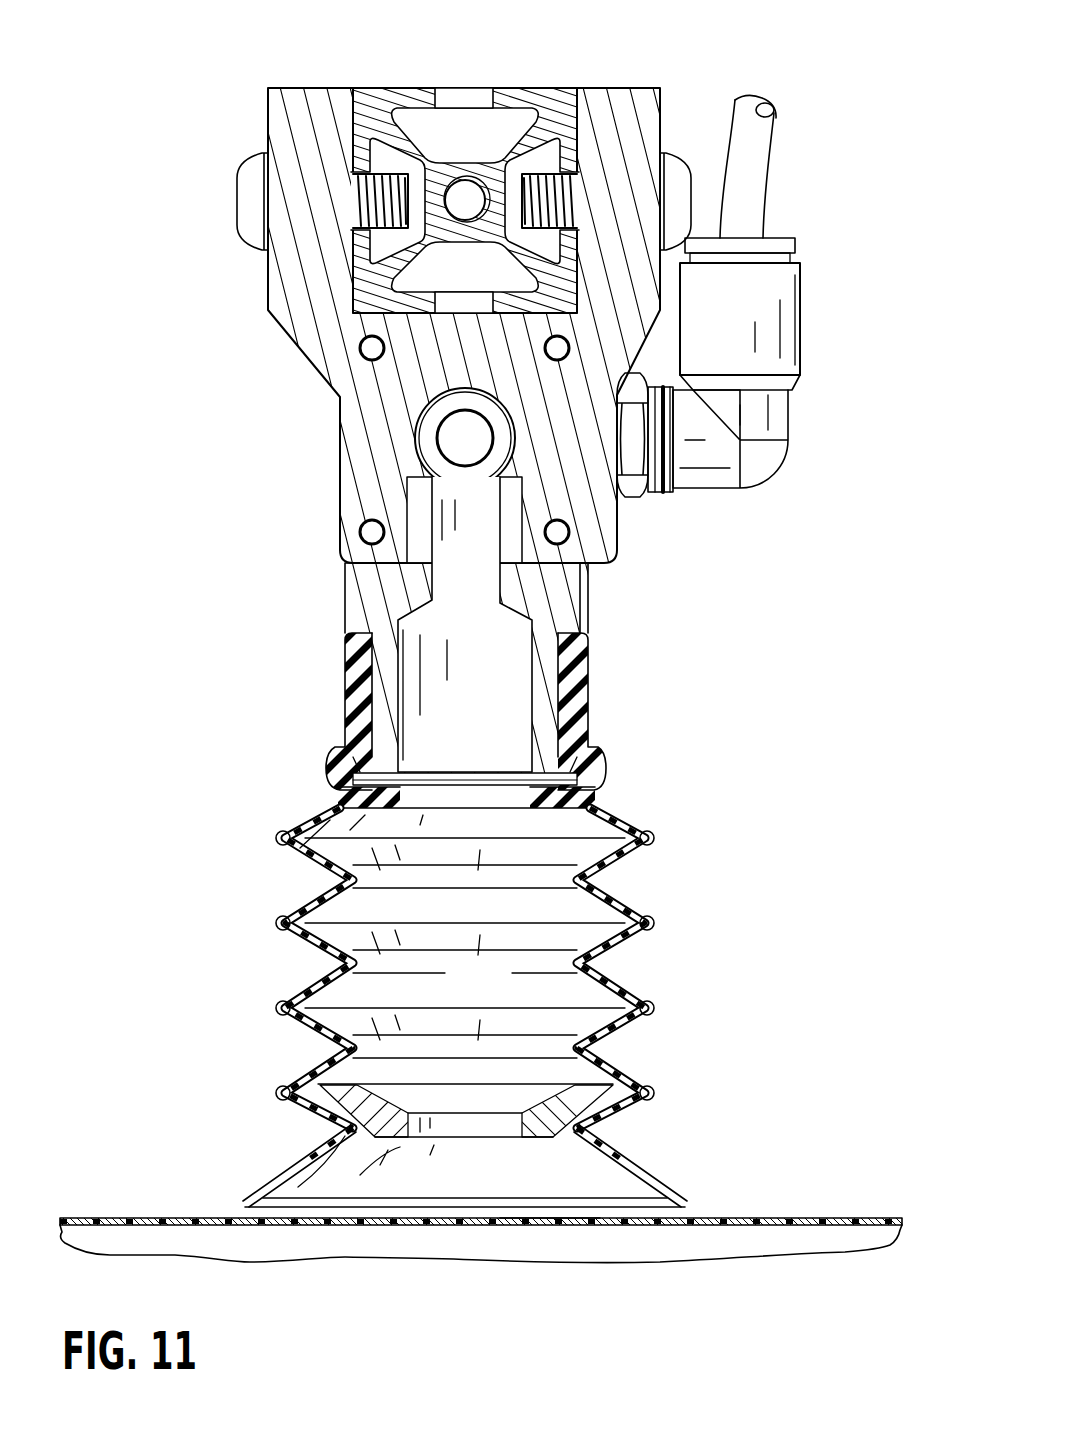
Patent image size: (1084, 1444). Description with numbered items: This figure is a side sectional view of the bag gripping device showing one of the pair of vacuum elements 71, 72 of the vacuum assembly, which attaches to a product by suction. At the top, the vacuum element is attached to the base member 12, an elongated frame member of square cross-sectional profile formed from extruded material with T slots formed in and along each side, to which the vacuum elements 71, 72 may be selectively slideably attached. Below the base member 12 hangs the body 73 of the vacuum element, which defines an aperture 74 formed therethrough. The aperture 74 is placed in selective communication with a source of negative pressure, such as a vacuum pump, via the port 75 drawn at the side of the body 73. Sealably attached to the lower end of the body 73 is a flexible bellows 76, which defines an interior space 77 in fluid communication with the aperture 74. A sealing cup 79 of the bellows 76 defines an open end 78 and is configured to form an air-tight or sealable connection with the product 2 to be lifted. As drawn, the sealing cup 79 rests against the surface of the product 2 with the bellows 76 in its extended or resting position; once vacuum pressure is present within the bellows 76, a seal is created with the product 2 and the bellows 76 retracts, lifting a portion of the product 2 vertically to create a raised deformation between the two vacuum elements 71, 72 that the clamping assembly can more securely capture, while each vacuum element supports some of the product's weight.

The product 2 is at (847, 1217).
The base member 12 is at (397, 93).
The first vacuum device or element 71 is at (655, 685).
The second vacuum device or element 72 is at (525, 386).
The body 73 is at (582, 606).
The aperture 74 is at (455, 583).
The port 75 is at (790, 348).
The bellows 76 is at (598, 910).
The interior space 77 is at (494, 996).
The open end 78 is at (544, 1220).
The sealing cup 79 is at (650, 1160).